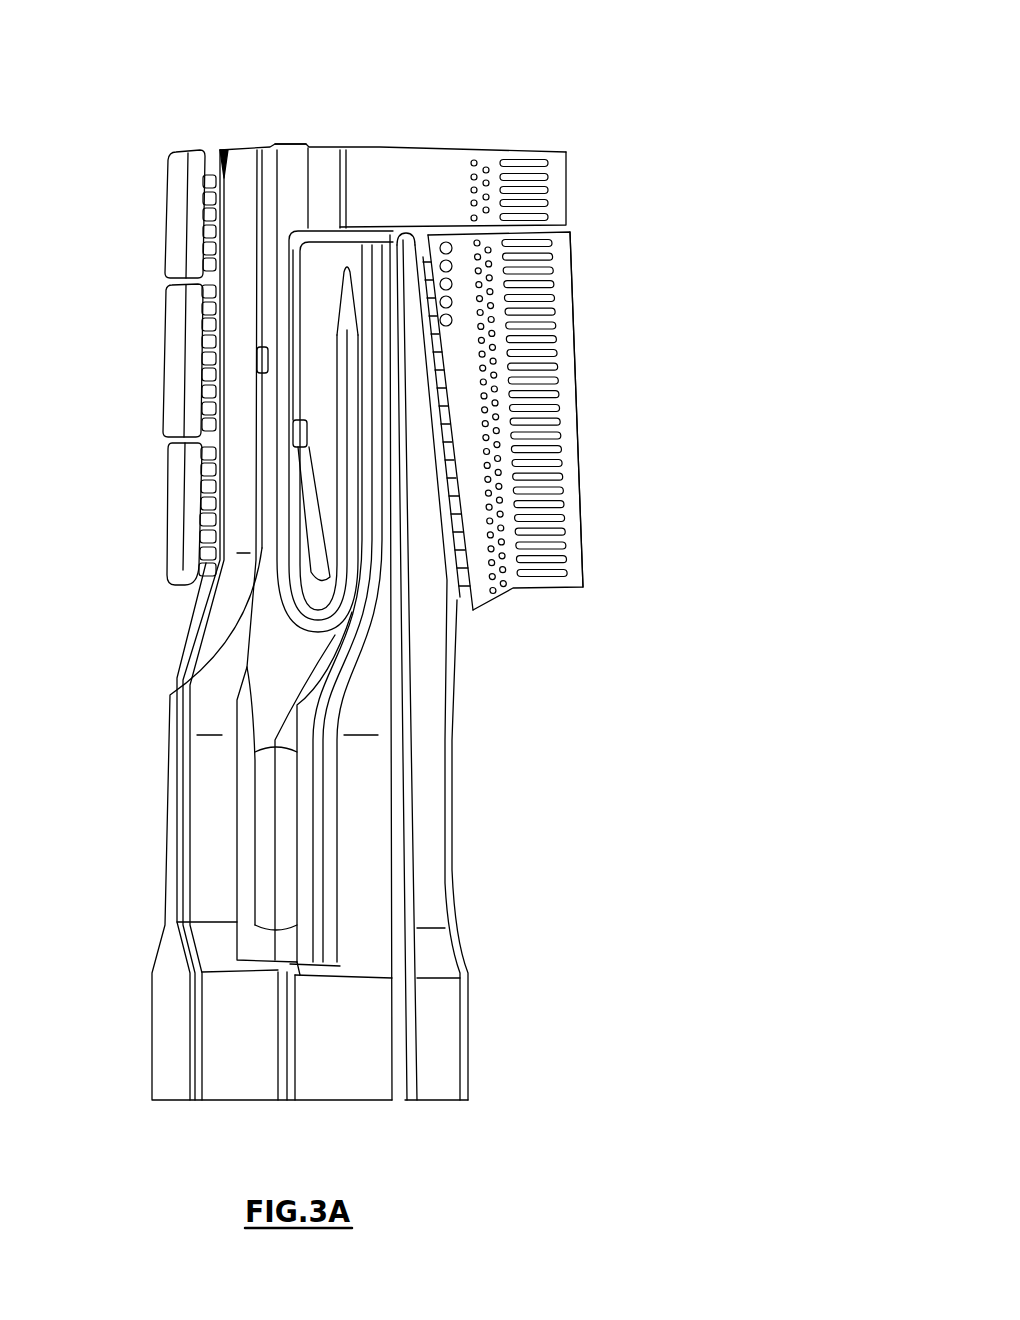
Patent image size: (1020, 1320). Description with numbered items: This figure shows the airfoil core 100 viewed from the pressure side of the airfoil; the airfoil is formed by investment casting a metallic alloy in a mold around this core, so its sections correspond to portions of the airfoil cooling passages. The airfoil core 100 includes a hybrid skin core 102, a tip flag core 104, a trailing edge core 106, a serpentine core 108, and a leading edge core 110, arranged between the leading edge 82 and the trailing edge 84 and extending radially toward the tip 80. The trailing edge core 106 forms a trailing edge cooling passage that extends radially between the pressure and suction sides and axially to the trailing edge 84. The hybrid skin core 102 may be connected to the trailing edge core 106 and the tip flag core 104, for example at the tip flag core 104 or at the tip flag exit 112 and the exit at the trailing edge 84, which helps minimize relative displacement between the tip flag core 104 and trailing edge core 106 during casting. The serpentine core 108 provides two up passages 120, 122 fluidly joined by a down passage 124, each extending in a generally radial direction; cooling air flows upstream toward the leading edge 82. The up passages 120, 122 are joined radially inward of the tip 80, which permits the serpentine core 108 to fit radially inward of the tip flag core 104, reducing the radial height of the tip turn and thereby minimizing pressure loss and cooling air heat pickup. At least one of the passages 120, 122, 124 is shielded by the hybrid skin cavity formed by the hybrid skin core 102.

The airfoil core 100 is at (556, 72).
The hybrid skin core 102 is at (269, 162).
The serpentine core 108 is at (297, 163).
The tip 80 is at (377, 143).
The tip flag core 104 is at (445, 167).
The tip flag exit 112 is at (570, 180).
The trailing edge core 106 is at (568, 283).
The trailing edge 84 is at (576, 360).
The leading edge 82 is at (177, 383).
The up passage 122 is at (222, 622).
The leading edge core 110 is at (220, 645).
The down passage 124 is at (340, 520).
The up passage 120 is at (398, 598).